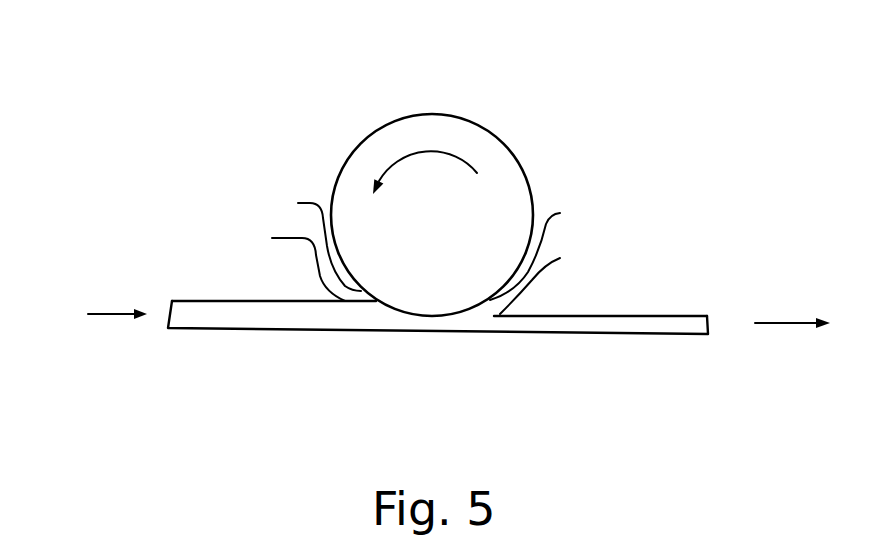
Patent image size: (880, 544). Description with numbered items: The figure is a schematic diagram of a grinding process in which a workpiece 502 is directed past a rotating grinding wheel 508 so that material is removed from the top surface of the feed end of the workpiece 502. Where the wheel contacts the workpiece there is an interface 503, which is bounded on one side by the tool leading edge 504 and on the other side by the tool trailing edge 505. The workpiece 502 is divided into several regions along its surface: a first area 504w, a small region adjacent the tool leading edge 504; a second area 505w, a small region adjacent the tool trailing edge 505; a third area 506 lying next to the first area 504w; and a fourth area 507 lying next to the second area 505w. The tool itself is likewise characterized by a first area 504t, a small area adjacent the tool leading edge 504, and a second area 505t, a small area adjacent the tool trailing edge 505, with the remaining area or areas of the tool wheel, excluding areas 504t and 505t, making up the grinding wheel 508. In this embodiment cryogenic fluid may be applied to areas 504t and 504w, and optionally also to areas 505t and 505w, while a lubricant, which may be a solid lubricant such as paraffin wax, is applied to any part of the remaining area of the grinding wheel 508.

The workpiece 502 is at (172, 312).
The interface 503 is at (398, 312).
The tool leading edge 504 is at (378, 302).
The first area on the tool 504t is at (304, 240).
The first area on the workpiece 504w is at (277, 262).
The tool trailing edge 505 is at (450, 315).
The second area on the tool 505t is at (551, 251).
The second area on the workpiece 505w is at (560, 281).
The third area 506 is at (257, 301).
The fourth area 507 is at (557, 316).
The grinding wheel 508 is at (428, 114).